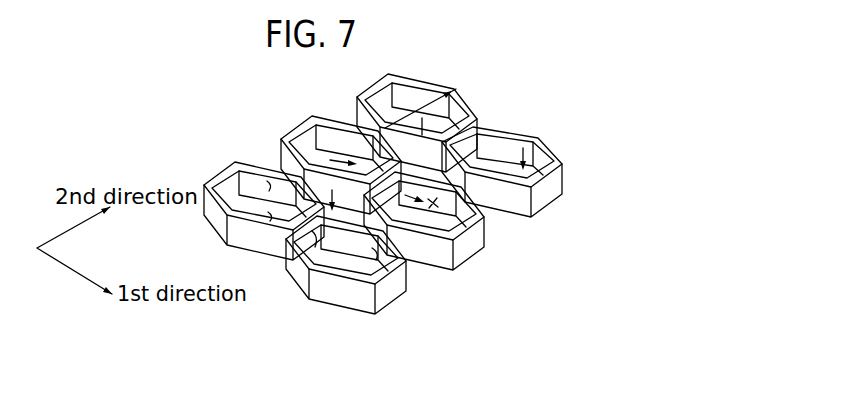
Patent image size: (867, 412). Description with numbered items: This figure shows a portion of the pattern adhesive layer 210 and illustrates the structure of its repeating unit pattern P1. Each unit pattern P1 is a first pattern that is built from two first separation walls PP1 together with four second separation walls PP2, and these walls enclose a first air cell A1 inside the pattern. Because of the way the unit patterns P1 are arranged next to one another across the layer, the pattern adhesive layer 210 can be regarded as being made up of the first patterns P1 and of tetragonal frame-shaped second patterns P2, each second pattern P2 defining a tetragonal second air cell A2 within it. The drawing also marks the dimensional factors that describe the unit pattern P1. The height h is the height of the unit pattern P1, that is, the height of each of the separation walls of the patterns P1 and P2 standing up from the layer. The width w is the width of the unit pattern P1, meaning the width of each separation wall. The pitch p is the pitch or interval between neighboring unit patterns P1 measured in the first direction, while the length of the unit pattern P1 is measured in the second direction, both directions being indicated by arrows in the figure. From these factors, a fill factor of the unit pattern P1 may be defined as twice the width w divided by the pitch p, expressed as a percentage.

The pattern adhesive layer 210 is at (398, 226).
The first separation wall PP1 is at (346, 250).
The second separation wall PP2 is at (236, 207).
The unit pattern P1 is at (482, 263).
The second pattern P2 is at (410, 248).
The first air cell A1 is at (520, 142).
The second air cell A2 is at (277, 152).
The pitch p is at (338, 120).
The width w is at (507, 153).
The height h is at (568, 147).